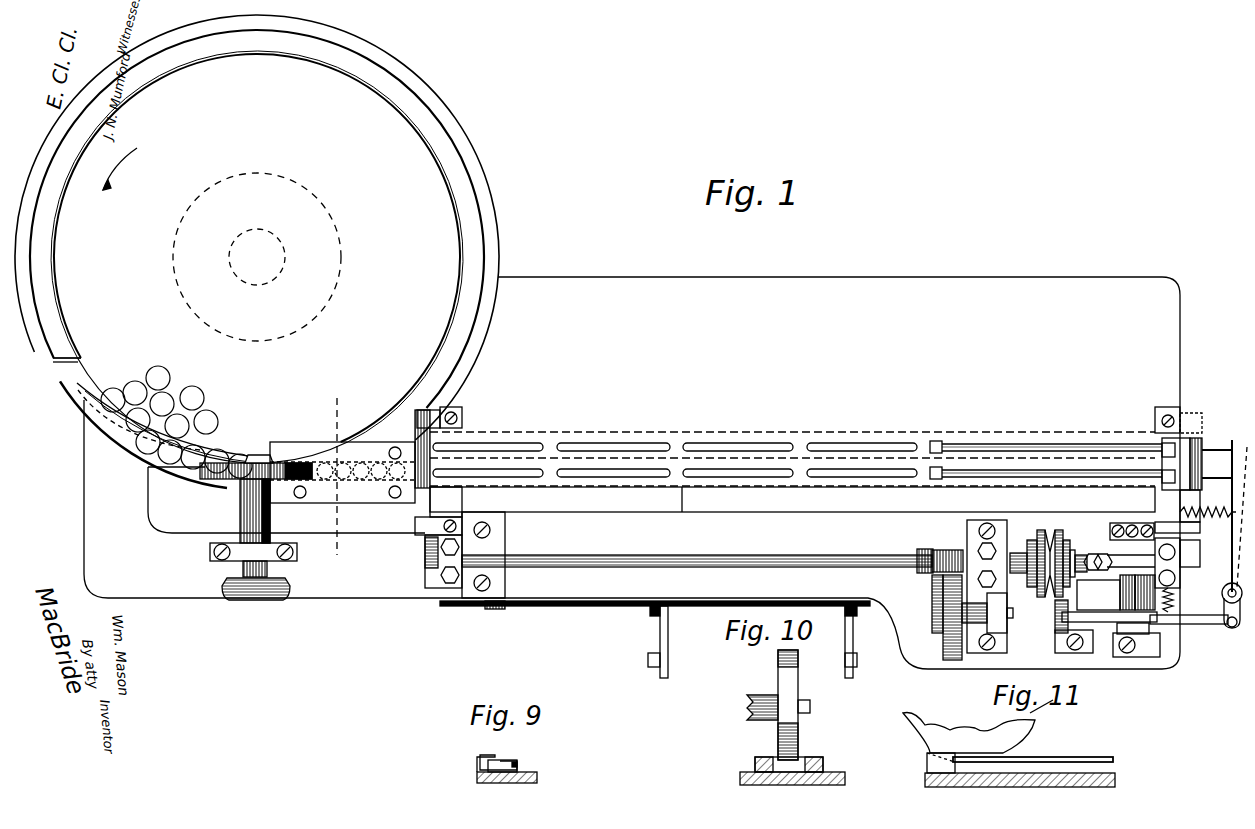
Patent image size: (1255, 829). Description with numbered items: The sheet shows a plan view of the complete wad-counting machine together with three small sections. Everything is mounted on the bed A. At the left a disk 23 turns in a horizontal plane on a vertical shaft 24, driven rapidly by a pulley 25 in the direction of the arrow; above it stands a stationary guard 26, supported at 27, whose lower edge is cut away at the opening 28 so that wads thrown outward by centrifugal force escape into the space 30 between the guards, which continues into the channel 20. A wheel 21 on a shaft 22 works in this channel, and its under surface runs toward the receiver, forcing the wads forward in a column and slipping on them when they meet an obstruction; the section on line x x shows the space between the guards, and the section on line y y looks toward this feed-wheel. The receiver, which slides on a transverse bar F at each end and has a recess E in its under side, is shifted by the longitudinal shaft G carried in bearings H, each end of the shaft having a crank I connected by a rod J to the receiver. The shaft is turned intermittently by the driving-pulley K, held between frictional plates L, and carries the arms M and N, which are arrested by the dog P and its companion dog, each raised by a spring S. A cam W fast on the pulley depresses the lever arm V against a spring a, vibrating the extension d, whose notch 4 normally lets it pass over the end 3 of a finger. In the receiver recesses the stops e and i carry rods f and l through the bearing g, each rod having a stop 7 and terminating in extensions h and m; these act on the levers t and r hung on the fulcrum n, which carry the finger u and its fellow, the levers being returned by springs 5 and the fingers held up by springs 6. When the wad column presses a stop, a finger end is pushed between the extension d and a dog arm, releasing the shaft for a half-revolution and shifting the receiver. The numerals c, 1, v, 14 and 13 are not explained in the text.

In FIG. 1, the bed A is at (632, 473).
In FIG. 1, the disk 23 is at (257, 251).
In FIG. 1, the vertical shaft 24 is at (256, 254).
In FIG. 1, the pulley 25 is at (312, 253).
In FIG. 1, the stationary guard 26 is at (218, 288).
In FIG. 9, the stationary guard 26 is at (510, 745).
In FIG. 11, the stationary guard 26 is at (1050, 757).
In FIG. 1, the guard support 27 is at (65, 366).
In FIG. 9, the guard support 27 is at (489, 761).
In FIG. 9, the opening 28 is at (502, 757).
In FIG. 11, the opening 28 is at (1070, 768).
In FIG. 1, the space 30 is at (176, 422).
In FIG. 1, the wheel 21 is at (222, 483).
In FIG. 10, the wheel 21 is at (797, 705).
In FIG. 11, the wheel 21 is at (978, 726).
In FIG. 1, the channel 20 is at (342, 471).
In FIG. 10, the channel 20 is at (792, 771).
In FIG. 1, the shaft 22 is at (253, 549).
In FIG. 10, the shaft 22 is at (752, 704).
In FIG. 1, the section line x x is at (152, 480).
In FIG. 1, the section line y y is at (334, 474).
In FIG. 1, the transverse bar F is at (424, 504).
In FIG. 1, the crank I is at (804, 561).
In FIG. 1, the rod J is at (420, 538).
In FIG. 1, the bearings H is at (478, 558).
In FIG. 1, the longitudinal shaft G is at (697, 555).
In FIG. 1, the slotted bar c is at (792, 472).
In FIG. 1, the stop i is at (935, 441).
In FIG. 1, the rod l is at (1052, 444).
In FIG. 1, the rod f is at (1045, 480).
In FIG. 1, the stop e is at (923, 481).
In FIG. 1, the bearing g is at (1154, 464).
In FIG. 1, the stop 7 is at (1182, 464).
In FIG. 1, the extension m is at (1217, 442).
In FIG. 1, the extension h is at (1217, 470).
In FIG. 1, the springs 5 is at (1195, 511).
In FIG. 1, the pin 1 is at (1200, 527).
In FIG. 1, the lever t is at (1201, 499).
In FIG. 1, the fulcrum n is at (1229, 602).
In FIG. 1, the finger u is at (1189, 628).
In FIG. 1, the lever r is at (1165, 601).
In FIG. 1, the springs 6 is at (1175, 608).
In FIG. 1, the extension d is at (1136, 640).
In FIG. 1, the end of finger w 3 is at (1138, 646).
In FIG. 1, the notch 4 is at (1153, 646).
In FIG. 1, the spring a is at (1122, 565).
In FIG. 1, the spring S is at (1139, 549).
In FIG. 1, the cam W is at (1060, 532).
In FIG. 1, the frictional plates L is at (1028, 545).
In FIG. 1, the recess E is at (1072, 548).
In FIG. 1, the driving-pulley K is at (987, 605).
In FIG. 1, the lever arm V is at (1106, 622).
In FIG. 1, the arm N is at (1122, 580).
In FIG. 1, the pin v is at (1113, 604).
In FIG. 1, the arm M is at (1128, 592).
In FIG. 1, the dog P is at (1145, 592).
In FIG. 1, the base bar 14 is at (655, 610).
In FIG. 1, the legs 13 is at (759, 642).